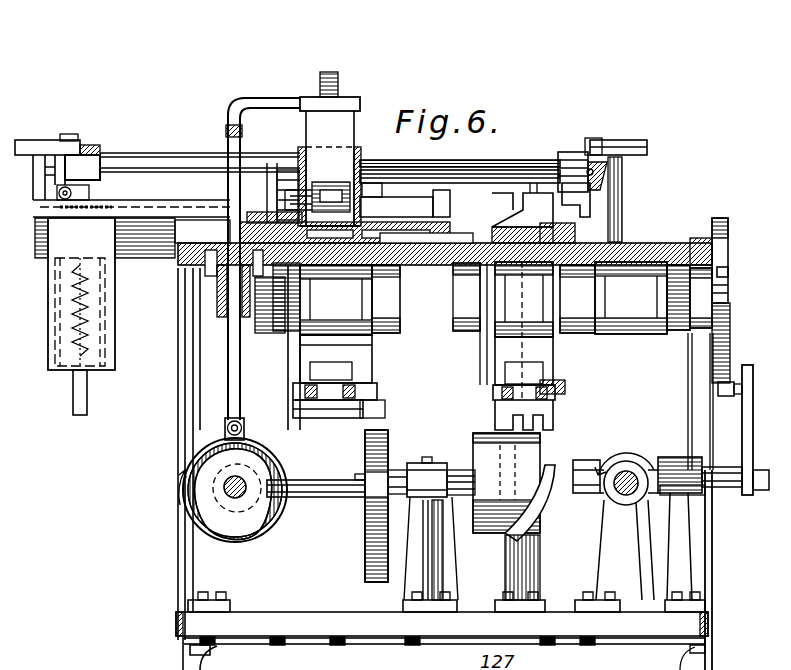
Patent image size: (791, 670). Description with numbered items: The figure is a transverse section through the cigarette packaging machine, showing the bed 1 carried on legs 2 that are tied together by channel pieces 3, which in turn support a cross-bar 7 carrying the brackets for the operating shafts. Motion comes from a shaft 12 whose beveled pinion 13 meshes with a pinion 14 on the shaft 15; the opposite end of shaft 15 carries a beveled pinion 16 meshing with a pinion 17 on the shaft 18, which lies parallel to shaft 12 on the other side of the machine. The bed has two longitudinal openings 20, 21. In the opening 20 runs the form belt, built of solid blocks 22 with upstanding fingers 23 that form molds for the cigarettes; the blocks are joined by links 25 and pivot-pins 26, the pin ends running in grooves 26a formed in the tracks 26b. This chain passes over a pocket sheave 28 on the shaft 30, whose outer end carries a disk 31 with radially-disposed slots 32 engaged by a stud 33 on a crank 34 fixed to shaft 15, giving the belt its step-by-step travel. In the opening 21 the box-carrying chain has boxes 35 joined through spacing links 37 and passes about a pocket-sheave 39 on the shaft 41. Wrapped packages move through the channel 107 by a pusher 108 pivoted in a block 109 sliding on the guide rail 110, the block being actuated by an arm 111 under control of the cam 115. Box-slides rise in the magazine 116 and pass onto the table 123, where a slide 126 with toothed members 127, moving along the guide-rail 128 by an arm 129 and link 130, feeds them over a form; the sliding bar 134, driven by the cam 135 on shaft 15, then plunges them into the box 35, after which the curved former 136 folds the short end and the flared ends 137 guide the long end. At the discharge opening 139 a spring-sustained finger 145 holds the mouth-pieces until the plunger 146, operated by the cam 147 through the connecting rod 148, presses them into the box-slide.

The bed 1 is at (432, 248).
The legs 2 is at (700, 566).
The channel pieces 3 is at (712, 620).
The cross-bar 7 is at (325, 614).
The shaft 12 is at (629, 474).
The beveled pinion 13 is at (619, 458).
The beveled pinion 14 is at (598, 518).
The shaft 15 is at (320, 478).
The beveled pinion 16 is at (273, 546).
The beveled pinion 17 is at (253, 423).
The shaft 18 is at (232, 480).
The opening 20 is at (548, 268).
The opening 21 is at (292, 268).
The blocks 22 is at (503, 242).
The upstanding fingers 23 is at (550, 428).
The links 25 is at (353, 97).
The pivot-pins 26 is at (565, 388).
The grooves 26a is at (611, 248).
The tracks 26b is at (652, 228).
The pocket sheave 28 is at (492, 343).
The shaft 30 is at (622, 308).
The disk 31 is at (717, 296).
The radially-disposed slots 32 is at (727, 278).
The stud 33 is at (726, 398).
The crank 34 is at (744, 436).
The boxes 35 is at (310, 400).
The spacing links 37 is at (370, 384).
The pocket-sheave 39 is at (365, 345).
The shaft 41 is at (397, 322).
The channel 107 is at (469, 218).
The pusher 108 is at (590, 208).
The block 109 is at (570, 162).
The guide rail 110 is at (491, 163).
The arm 111 is at (620, 158).
The cam 115 is at (495, 498).
The magazine 116 is at (102, 298).
The table 123 is at (170, 213).
The slide 126 is at (86, 168).
The toothed members 127 is at (78, 194).
The guide-rail 128 is at (146, 160).
The arm 129 is at (62, 150).
The link 130 is at (38, 141).
The sliding bar 134 is at (331, 413).
The cam 135 is at (373, 436).
The curved former 136 is at (283, 226).
The flared ends 137 is at (393, 198).
The discharge opening 139 is at (358, 150).
The spring-sustained finger 145 is at (318, 182).
The plunger 146 is at (330, 149).
The cam 147 is at (290, 522).
The connecting rod 148 is at (243, 377).